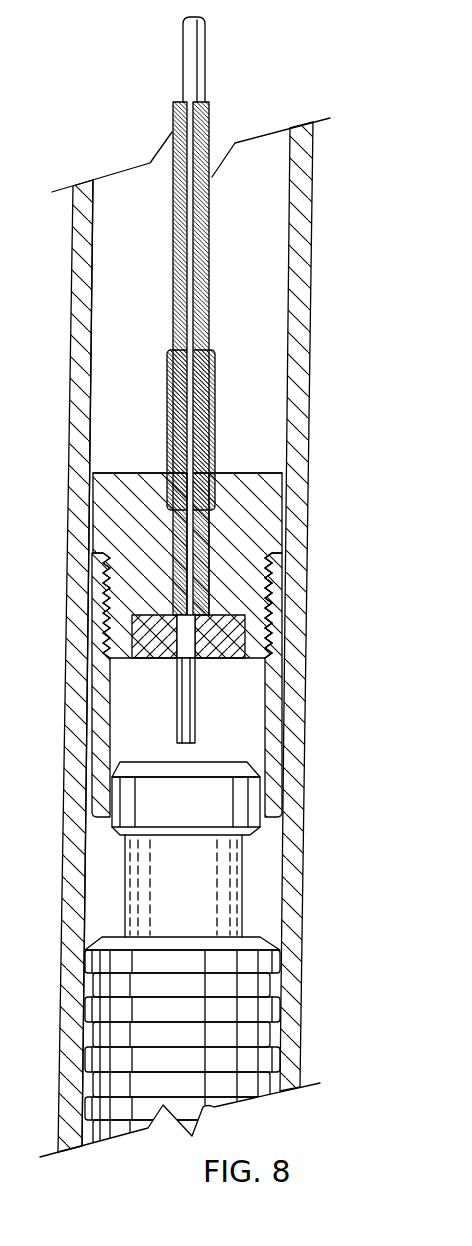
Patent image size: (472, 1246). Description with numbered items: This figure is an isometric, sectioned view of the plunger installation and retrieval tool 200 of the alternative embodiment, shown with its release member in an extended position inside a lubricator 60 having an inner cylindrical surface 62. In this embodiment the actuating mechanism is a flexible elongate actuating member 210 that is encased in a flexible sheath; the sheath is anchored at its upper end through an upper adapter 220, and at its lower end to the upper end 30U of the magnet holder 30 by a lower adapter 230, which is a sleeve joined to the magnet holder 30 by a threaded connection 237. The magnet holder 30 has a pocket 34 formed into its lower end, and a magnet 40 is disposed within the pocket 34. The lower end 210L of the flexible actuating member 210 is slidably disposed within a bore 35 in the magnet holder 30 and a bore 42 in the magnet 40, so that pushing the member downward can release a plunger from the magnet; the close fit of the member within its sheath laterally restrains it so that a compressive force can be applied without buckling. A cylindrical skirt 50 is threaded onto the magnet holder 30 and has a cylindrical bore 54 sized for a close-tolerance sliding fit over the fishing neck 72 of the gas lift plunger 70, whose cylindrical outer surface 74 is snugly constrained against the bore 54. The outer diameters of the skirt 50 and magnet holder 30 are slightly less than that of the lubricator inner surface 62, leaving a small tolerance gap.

The magnet holder 30 is at (107, 472).
The upper end of magnet holder 30U is at (250, 472).
The pocket 34 is at (268, 640).
The bore in magnet holder 35 is at (190, 540).
The magnet 40 is at (228, 648).
The bore in magnet 42 is at (186, 655).
The cylindrical skirt 50 is at (92, 797).
The cylindrical bore 54 is at (110, 702).
The lubricator 60 is at (73, 347).
The inner cylindrical surface 62 is at (97, 207).
The gas lift plunger 70 is at (85, 1005).
The fishing neck 72 is at (213, 772).
The cylindrical outer surface of fishing neck 74 is at (193, 812).
The plunger installation and retrieval tool 200 is at (151, 316).
The flexible elongate actuating member 210 is at (205, 78).
The lower end of flexible actuating member 210L is at (175, 720).
The upper adapter 220 is at (173, 300).
The lower adapter 230 is at (167, 386).
The threaded connection 237 is at (205, 492).